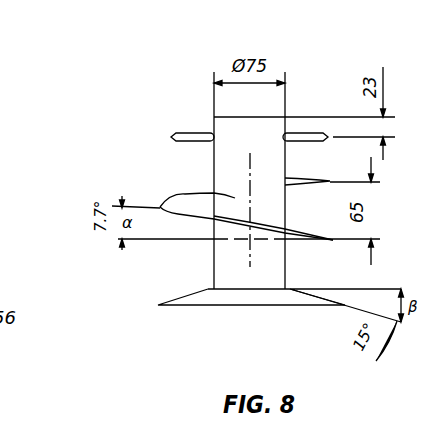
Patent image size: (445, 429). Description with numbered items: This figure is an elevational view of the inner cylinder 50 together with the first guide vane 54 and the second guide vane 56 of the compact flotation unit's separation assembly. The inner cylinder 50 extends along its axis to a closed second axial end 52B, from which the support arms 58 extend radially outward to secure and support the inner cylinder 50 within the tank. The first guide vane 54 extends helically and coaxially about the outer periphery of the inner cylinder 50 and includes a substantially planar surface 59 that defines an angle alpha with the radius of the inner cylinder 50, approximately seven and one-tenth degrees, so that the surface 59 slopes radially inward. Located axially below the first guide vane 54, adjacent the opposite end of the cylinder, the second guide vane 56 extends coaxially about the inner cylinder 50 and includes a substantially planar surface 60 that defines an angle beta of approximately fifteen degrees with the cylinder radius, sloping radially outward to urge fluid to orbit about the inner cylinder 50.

The inner cylinder 50 is at (213, 177).
The second axial end 52B is at (216, 116).
The first guide vane 54 is at (172, 205).
The second guide vane 56 is at (198, 295).
The support arms 58 is at (184, 133).
The planar surface 59 is at (176, 205).
The planar surface 60 is at (233, 294).